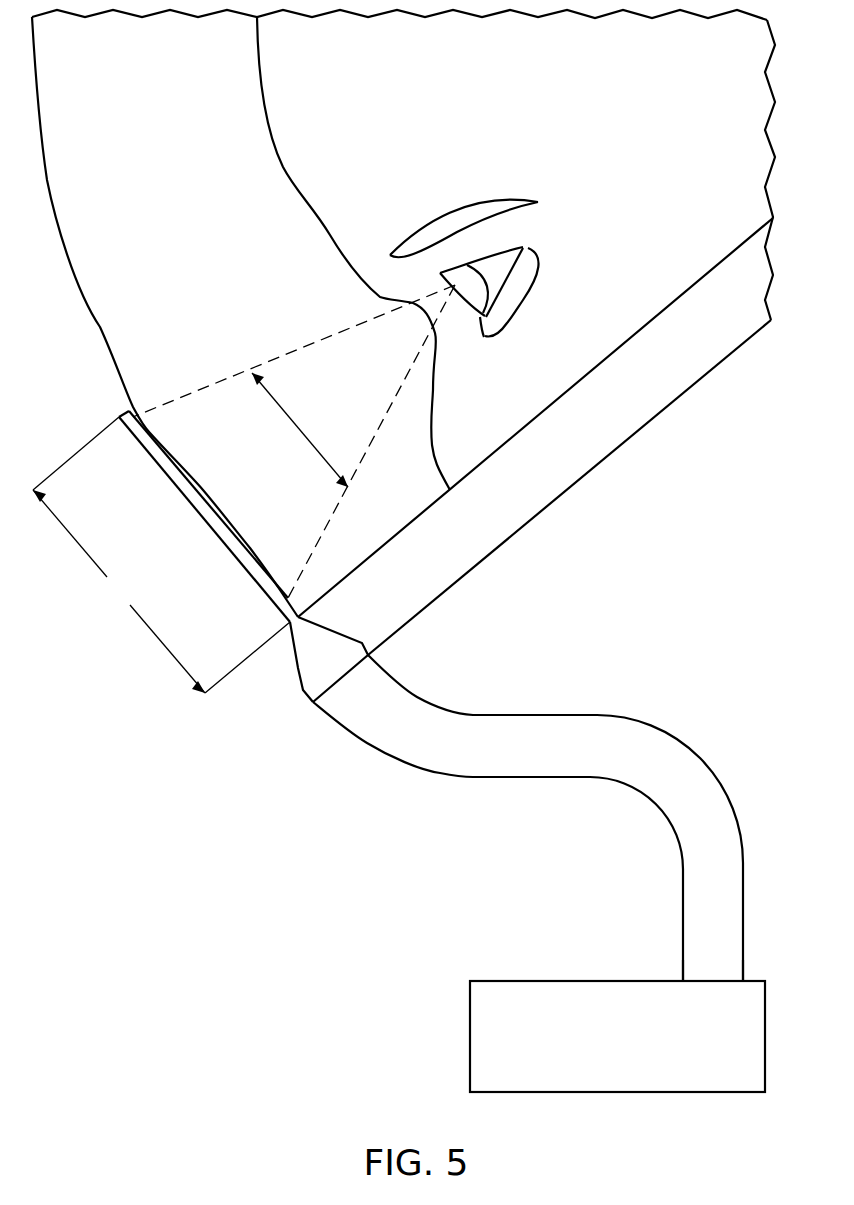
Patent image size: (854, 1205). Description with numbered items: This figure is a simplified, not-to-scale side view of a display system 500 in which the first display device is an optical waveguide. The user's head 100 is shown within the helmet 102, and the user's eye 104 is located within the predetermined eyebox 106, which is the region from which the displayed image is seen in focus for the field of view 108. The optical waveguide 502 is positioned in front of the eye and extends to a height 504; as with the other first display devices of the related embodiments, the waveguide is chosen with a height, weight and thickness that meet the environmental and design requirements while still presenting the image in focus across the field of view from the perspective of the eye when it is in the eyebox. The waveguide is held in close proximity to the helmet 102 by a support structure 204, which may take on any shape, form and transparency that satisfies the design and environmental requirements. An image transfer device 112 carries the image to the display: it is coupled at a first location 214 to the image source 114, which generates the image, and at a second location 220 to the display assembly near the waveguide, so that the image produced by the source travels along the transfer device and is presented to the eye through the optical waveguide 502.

The user's head 100 is at (260, 100).
The helmet 102 is at (47, 180).
The user's eye 104 is at (500, 258).
The predetermined eyebox 106 is at (522, 300).
The field of view 108 is at (298, 423).
The image transfer device 112 is at (617, 715).
The image source 114 is at (518, 981).
The support structure 204 is at (670, 395).
The first location 214 is at (746, 981).
The second location 220 is at (367, 655).
The display system 500 is at (288, 896).
The optical waveguide 502 is at (183, 500).
The height 504 is at (161, 555).